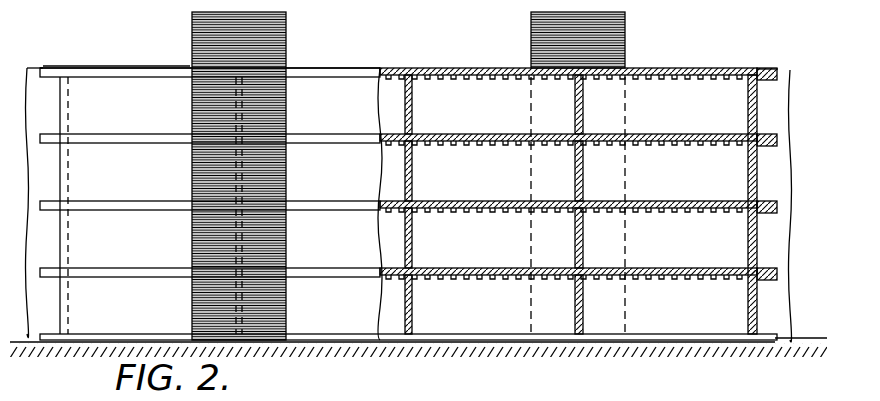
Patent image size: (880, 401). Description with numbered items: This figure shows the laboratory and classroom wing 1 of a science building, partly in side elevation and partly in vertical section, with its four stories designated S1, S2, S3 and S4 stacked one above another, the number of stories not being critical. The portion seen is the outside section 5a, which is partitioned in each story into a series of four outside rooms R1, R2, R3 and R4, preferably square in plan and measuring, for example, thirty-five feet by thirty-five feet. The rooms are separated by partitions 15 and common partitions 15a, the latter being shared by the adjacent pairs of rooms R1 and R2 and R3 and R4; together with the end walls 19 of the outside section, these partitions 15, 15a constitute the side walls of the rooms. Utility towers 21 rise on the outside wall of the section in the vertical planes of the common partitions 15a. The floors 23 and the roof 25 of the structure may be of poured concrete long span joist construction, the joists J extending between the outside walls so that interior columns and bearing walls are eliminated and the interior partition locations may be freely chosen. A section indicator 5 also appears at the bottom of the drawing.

The laboratory and classroom wing 1 is at (729, 54).
The outside section 5a is at (89, 64).
The end wall 19 is at (60, 191).
The utility tower 21 is at (192, 47).
The floor 23 is at (620, 134).
The roof 25 is at (679, 70).
The partition 15 is at (413, 109).
The common partition 15a is at (235, 117).
The joist J is at (722, 82).
The room R1 is at (137, 95).
The room R2 is at (388, 109).
The room R3 is at (503, 119).
The room R4 is at (683, 119).
The story S1 is at (770, 307).
The story S2 is at (770, 245).
The story S3 is at (770, 176).
The story S4 is at (770, 112).
The section line 5 is at (470, 397).